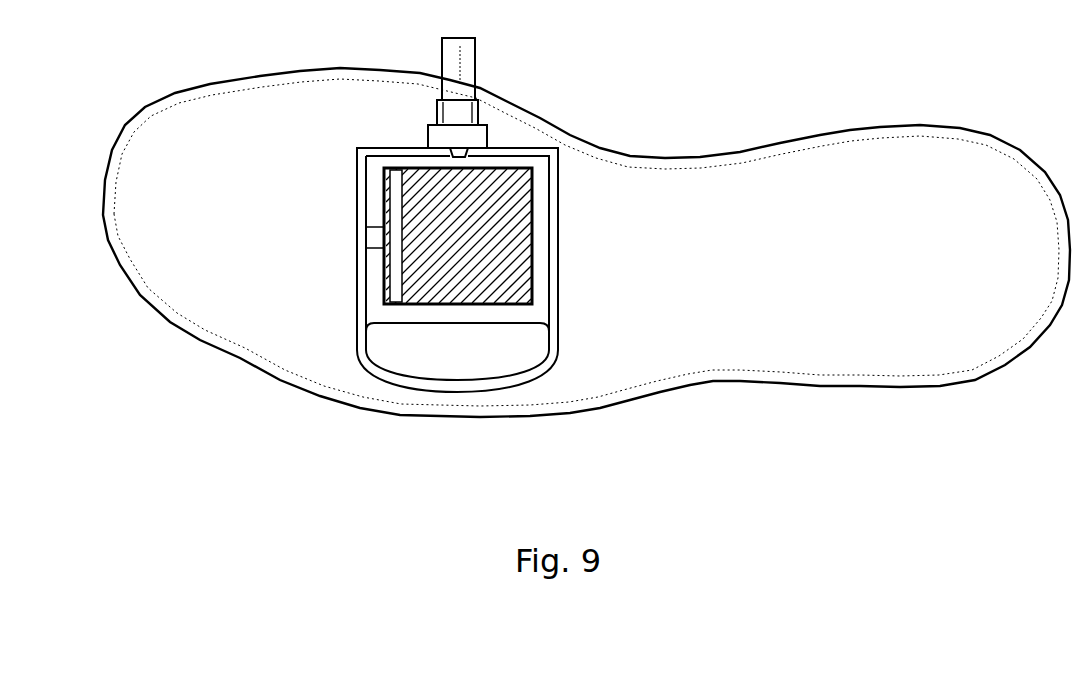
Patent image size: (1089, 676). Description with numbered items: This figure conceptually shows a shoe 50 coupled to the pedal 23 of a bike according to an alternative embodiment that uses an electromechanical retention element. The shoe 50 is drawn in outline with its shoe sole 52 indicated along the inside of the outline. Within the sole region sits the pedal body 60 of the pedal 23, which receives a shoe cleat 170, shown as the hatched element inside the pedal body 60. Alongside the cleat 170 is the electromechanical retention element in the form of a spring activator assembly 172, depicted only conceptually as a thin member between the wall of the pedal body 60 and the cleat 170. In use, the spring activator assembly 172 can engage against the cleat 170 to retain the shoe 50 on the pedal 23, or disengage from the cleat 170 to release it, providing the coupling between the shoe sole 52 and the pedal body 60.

The pedal 23 is at (342, 208).
The shoe 50 is at (823, 388).
The shoe sole 52 is at (921, 353).
The pedal body 60 is at (562, 299).
The shoe cleat 170 is at (516, 173).
The spring activator assembly 172 is at (383, 250).